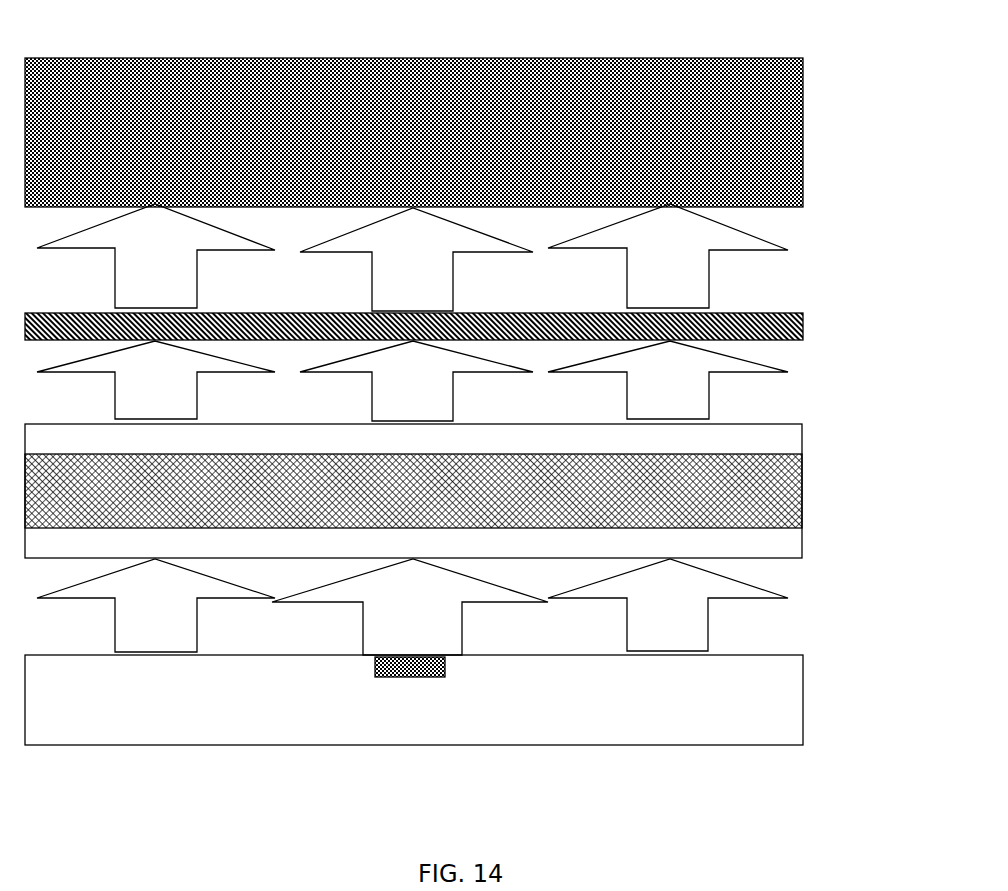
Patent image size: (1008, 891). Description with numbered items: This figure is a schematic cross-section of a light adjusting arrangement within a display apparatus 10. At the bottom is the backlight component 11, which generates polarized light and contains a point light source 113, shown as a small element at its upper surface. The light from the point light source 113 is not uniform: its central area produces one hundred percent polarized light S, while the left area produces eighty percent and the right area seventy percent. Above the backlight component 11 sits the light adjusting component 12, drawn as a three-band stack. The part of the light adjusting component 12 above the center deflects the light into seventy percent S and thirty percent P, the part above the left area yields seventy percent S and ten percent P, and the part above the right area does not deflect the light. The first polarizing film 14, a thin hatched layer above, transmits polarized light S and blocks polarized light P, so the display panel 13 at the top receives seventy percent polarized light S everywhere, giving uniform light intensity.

The display apparatus 10 is at (55, 41).
The backlight component 11 is at (770, 700).
The light adjusting component 12 is at (818, 428).
The display panel 13 is at (773, 110).
The first polarizing film 14 is at (803, 327).
The point light source 113 is at (410, 677).